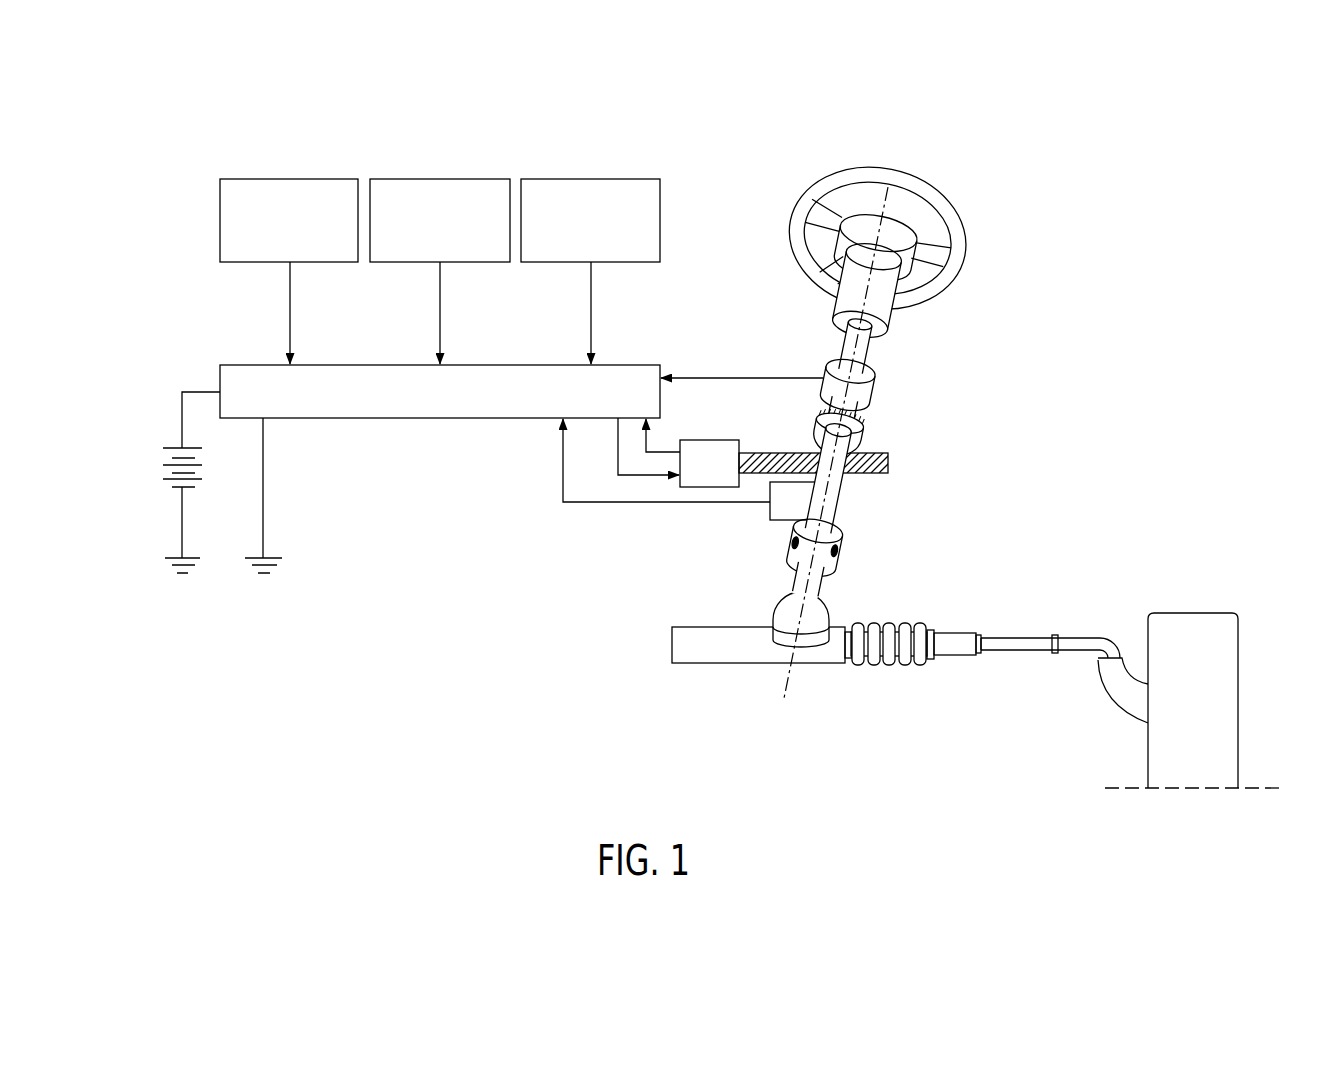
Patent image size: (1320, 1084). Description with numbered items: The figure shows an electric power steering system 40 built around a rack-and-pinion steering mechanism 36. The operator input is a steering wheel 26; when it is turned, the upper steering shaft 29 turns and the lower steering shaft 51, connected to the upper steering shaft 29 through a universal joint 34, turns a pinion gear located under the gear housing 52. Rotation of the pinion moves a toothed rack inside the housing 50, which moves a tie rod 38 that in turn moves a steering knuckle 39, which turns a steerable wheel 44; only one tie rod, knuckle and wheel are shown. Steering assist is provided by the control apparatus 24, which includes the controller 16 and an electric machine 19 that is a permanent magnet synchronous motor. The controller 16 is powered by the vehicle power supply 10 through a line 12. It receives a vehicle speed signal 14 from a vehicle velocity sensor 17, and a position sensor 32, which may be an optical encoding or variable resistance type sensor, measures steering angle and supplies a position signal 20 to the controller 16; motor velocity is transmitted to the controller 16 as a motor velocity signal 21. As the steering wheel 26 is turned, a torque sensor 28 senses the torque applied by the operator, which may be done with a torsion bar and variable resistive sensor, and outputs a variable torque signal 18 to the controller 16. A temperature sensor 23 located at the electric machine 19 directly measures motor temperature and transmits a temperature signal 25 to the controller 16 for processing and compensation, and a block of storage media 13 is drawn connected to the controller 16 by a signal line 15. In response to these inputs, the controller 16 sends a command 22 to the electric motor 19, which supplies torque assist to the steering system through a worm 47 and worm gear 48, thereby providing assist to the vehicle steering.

The vehicle power supply 10 is at (170, 471).
The line 12 is at (196, 390).
The storage media 13 is at (290, 179).
The vehicle speed signal 14 is at (439, 293).
The storage media signal 15 is at (288, 293).
The controller 16 is at (413, 420).
The vehicle velocity sensor 17 is at (441, 179).
The torque signal 18 is at (749, 377).
The electric machine 19 is at (718, 439).
The position signal 20 is at (675, 504).
The motor velocity signal 21 is at (668, 450).
The command 22 is at (631, 480).
The temperature sensor 23 is at (591, 179).
The control apparatus 24 is at (1040, 368).
The temperature signal 25 is at (589, 293).
The steering wheel 26 is at (925, 200).
The torque sensor 28 is at (868, 380).
The upper steering shaft 29 is at (845, 352).
The position sensor 32 is at (769, 507).
The universal joint 34 is at (841, 545).
The steering mechanism 36 is at (911, 619).
The tie rod 38 is at (1012, 648).
The steering knuckle 39 is at (1120, 690).
The electric power steering system 40 is at (1112, 455).
The steerable wheel 44 is at (1182, 628).
The worm 47 is at (889, 462).
The worm gear 48 is at (856, 430).
The housing 50 is at (707, 656).
The lower steering shaft 51 is at (826, 588).
The gear housing 52 is at (779, 606).